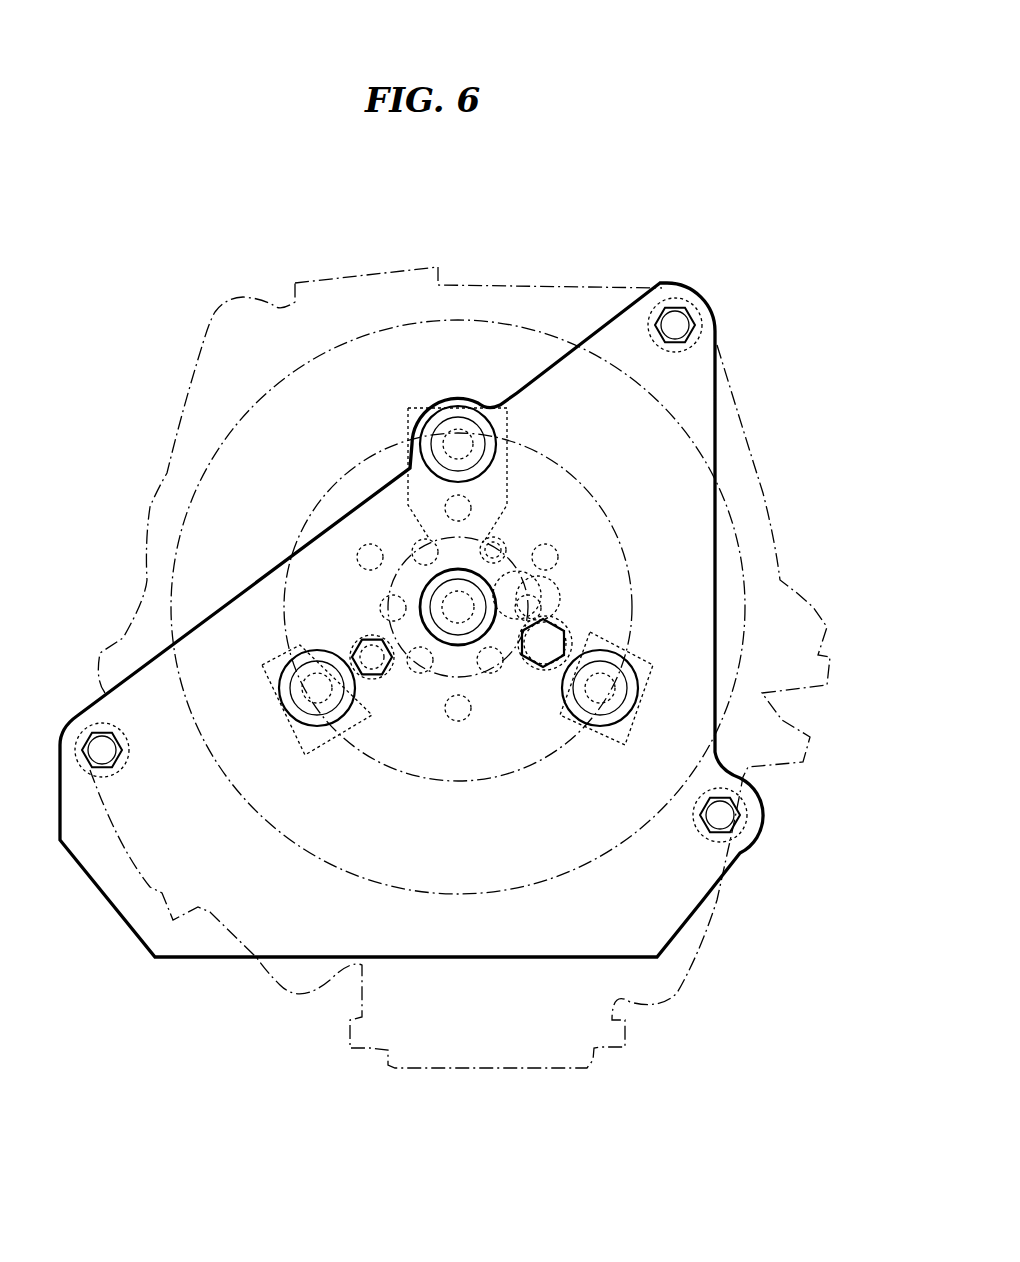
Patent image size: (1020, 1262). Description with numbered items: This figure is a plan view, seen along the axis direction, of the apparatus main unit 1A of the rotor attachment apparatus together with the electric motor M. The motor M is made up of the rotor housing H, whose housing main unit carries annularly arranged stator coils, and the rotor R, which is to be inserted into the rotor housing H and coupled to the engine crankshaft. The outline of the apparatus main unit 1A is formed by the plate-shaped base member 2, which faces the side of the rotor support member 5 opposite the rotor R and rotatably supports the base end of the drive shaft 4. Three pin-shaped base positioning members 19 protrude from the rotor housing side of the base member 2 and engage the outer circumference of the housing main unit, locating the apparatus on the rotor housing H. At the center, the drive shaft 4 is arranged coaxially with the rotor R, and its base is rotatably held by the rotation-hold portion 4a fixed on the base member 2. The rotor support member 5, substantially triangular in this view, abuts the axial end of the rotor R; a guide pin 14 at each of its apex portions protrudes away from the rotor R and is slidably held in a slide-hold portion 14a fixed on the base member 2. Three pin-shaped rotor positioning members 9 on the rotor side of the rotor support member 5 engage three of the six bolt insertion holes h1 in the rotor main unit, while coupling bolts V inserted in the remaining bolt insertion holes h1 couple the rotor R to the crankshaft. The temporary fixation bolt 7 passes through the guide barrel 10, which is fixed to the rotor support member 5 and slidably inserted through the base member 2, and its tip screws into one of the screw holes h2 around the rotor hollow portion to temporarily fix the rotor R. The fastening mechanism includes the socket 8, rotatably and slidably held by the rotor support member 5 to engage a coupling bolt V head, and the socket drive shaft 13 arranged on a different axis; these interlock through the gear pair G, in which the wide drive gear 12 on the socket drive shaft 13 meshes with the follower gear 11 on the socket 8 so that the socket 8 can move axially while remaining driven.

The apparatus main unit 1A is at (905, 286).
The base member 2 is at (722, 437).
The drive shaft 4 is at (447, 645).
The rotation-hold portion 4a is at (455, 623).
The rotor support member 5 is at (655, 650).
The temporary fixation bolt 7 is at (372, 678).
The socket 8 is at (548, 598).
The rotor positioning member 9 is at (497, 542).
The guide barrel 10 is at (385, 670).
The follower gear 11 is at (522, 622).
The drive gear 12 is at (550, 668).
The socket drive shaft 13 is at (548, 627).
The guide pin 14 is at (447, 408).
The slide-hold portion 14a is at (472, 418).
The base positioning member 19 is at (688, 300).
The gear pair G is at (583, 779).
The rotor housing H is at (205, 340).
The electric motor M is at (437, 667).
The rotor R is at (330, 487).
The coupling bolt V is at (552, 596).
The bolt insertion hole h1 is at (532, 590).
The screw hole h2 is at (362, 648).